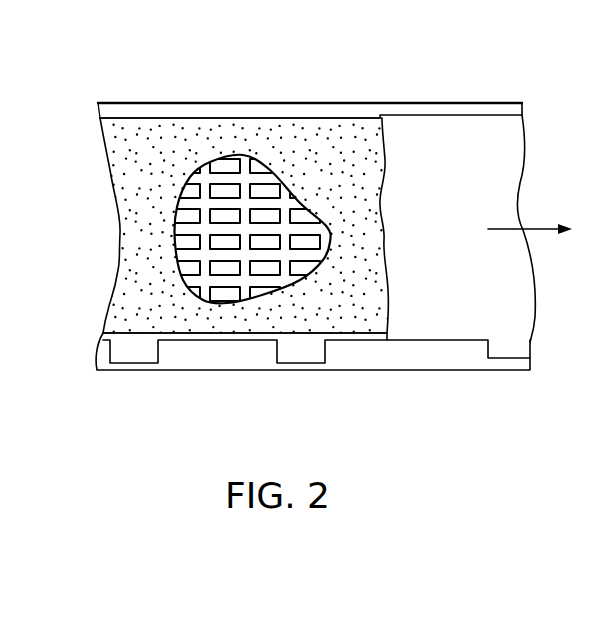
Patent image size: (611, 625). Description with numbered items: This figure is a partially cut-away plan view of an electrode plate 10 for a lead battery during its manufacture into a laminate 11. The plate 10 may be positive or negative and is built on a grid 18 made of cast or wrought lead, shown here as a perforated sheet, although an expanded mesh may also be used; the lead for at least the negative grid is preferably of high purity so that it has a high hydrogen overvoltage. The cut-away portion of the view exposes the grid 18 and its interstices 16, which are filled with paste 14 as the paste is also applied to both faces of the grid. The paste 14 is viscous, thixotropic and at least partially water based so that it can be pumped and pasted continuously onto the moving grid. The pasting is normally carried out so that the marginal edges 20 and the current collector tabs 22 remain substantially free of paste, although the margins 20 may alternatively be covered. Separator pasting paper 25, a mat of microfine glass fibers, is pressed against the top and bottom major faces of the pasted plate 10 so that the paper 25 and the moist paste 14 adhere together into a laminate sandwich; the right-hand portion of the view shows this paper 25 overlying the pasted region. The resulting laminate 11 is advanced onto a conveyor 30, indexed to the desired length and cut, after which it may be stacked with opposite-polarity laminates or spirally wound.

The electrode plate 10 is at (163, 108).
The laminate 11 is at (497, 112).
The paste 14 is at (261, 133).
The interstices 16 is at (270, 270).
The grid 18 is at (246, 283).
The marginal edges 20 is at (315, 122).
The current collector tabs 22 is at (132, 357).
The separator pasting paper 25 is at (515, 137).
The conveyor 30 is at (412, 358).